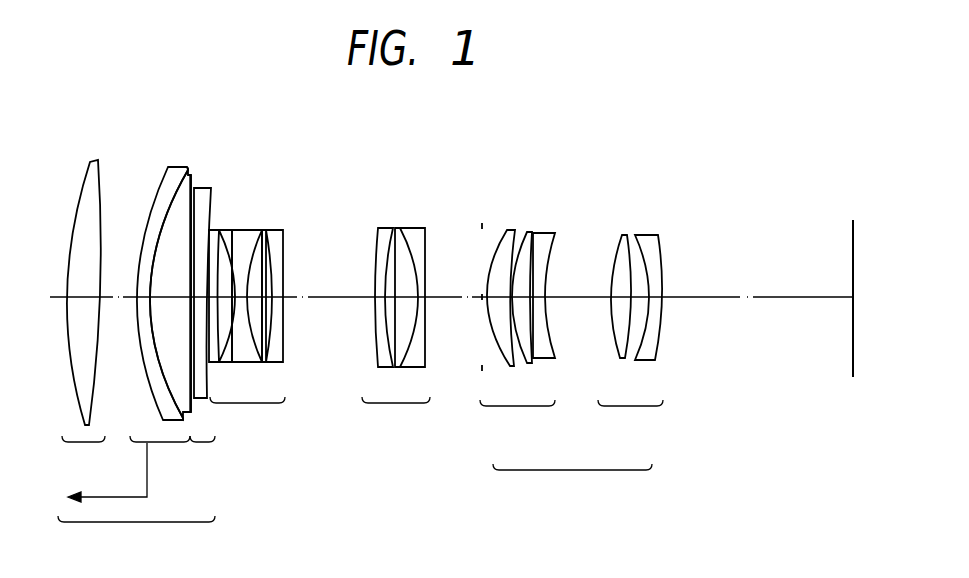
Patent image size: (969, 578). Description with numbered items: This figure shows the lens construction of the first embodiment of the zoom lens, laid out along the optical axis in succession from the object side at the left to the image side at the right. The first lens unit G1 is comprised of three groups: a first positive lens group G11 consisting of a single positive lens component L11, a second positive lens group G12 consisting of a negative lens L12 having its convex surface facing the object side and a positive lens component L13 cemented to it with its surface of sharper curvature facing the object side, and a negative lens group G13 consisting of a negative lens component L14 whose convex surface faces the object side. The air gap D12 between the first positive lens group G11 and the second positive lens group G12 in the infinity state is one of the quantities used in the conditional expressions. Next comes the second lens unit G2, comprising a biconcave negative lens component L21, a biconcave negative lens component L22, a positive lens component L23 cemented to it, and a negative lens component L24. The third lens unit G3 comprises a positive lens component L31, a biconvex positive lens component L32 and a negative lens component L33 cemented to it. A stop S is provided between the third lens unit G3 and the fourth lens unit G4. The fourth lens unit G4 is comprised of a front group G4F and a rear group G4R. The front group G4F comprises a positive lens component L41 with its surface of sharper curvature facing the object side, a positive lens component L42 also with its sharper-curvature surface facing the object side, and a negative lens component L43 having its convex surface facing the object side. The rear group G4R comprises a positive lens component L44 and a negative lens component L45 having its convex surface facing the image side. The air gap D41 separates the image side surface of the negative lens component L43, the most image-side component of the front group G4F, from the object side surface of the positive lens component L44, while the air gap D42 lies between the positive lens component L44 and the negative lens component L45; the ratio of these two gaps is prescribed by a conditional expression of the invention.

The positive lens component L11 is at (88, 170).
The negative lens L12 is at (165, 183).
The positive lens component L13 is at (180, 188).
The negative lens component L14 is at (208, 190).
The biconcave negative lens component L21 is at (220, 228).
The biconcave negative lens component L22 is at (243, 233).
The positive lens component L23 is at (262, 233).
The negative lens component L24 is at (282, 240).
The positive lens component L31 is at (382, 228).
The biconvex positive lens component L32 is at (400, 228).
The negative lens component L33 is at (418, 228).
The positive lens component L41 is at (505, 232).
The positive lens component L42 is at (528, 232).
The negative lens component L43 is at (548, 232).
The positive lens component L44 is at (622, 236).
The negative lens component L45 is at (648, 236).
The stop S is at (482, 283).
The air gap D12 is at (118, 343).
The air gap D41 is at (583, 316).
The air gap D42 is at (637, 297).
The first lens unit G1 is at (136, 500).
The first positive lens group G11 is at (83, 455).
The second positive lens group G12 is at (160, 455).
The negative lens group G13 is at (207, 455).
The second lens unit G2 is at (247, 417).
The third lens unit G3 is at (396, 417).
The fourth lens unit G4 is at (572, 484).
The front group G4F is at (517, 420).
The rear group G4R is at (630, 420).